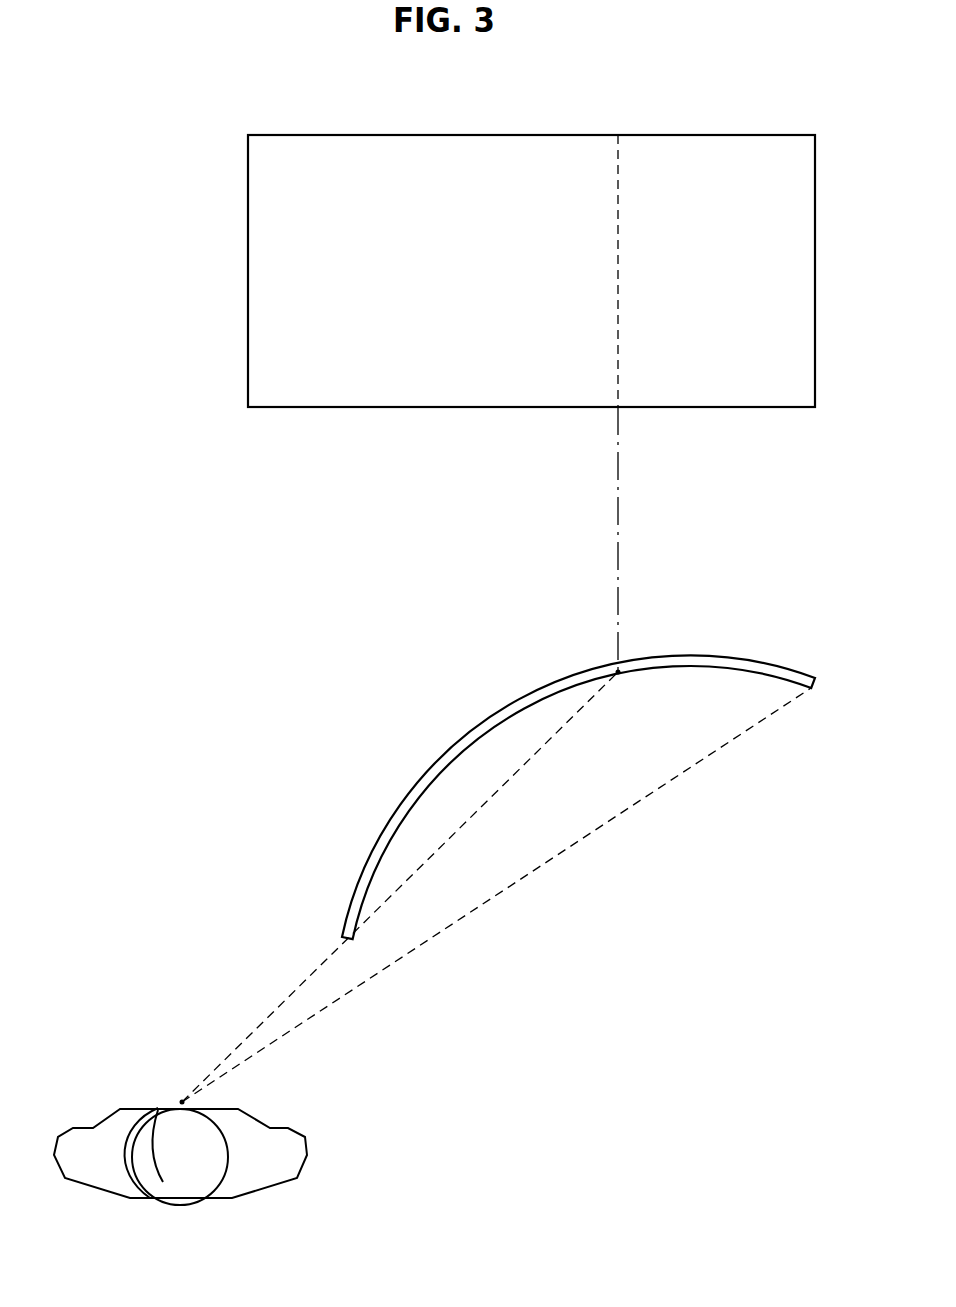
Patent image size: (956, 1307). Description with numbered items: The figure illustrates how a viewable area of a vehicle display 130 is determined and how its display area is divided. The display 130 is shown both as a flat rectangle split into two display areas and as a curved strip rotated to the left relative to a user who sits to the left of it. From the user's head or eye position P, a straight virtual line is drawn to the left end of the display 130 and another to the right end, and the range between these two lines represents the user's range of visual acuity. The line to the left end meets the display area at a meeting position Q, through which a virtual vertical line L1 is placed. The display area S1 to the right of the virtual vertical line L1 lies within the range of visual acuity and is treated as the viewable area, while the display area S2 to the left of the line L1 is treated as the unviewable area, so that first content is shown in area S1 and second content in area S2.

The display 130 is at (703, 138).
The virtual vertical line L1 is at (618, 169).
The viewable area S1 is at (694, 706).
The unviewable area S2 is at (467, 779).
The meeting position Q is at (618, 672).
The eye position P is at (182, 1100).